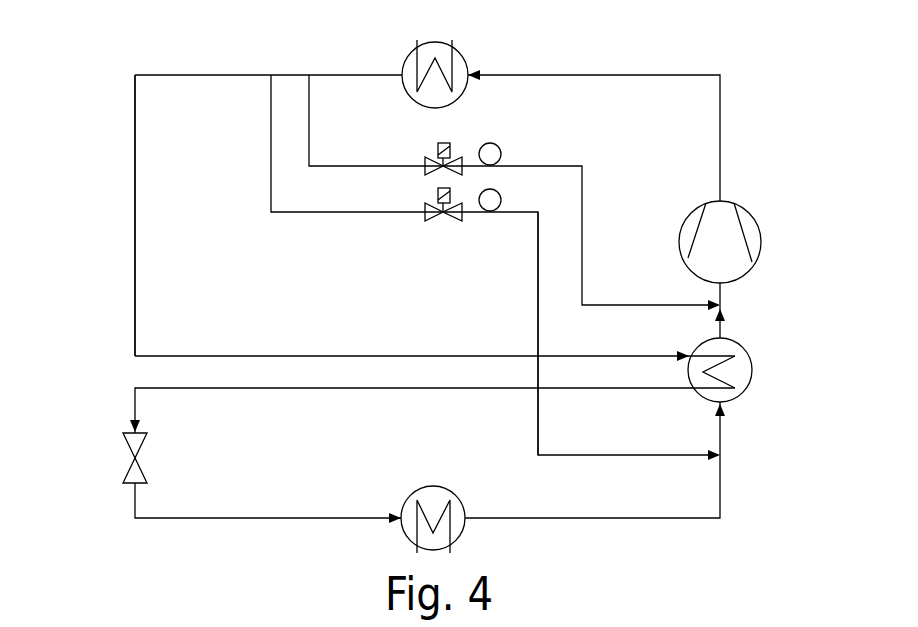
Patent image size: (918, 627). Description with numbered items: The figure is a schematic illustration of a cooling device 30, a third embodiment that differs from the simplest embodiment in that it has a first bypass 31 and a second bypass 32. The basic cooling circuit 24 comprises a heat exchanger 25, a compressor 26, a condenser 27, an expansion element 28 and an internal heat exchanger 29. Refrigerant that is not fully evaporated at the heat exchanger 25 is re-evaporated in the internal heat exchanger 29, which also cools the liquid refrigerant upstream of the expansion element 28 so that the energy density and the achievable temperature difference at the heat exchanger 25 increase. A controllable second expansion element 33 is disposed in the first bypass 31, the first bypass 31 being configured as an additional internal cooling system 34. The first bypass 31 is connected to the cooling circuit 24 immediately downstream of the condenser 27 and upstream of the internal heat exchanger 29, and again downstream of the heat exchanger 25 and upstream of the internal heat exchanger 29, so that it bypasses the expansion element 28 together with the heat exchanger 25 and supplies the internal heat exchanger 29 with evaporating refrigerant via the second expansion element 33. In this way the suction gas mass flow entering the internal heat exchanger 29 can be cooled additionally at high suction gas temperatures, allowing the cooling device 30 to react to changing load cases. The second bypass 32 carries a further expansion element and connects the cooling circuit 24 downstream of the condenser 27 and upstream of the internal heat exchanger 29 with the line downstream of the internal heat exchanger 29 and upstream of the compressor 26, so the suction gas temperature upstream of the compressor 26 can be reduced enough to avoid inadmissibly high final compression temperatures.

The cooling circuit 24 is at (120, 156).
The heat exchanger 25 is at (435, 498).
The compressor 26 is at (724, 222).
The condenser 27 is at (448, 66).
The expansion element 28 is at (120, 472).
The internal heat exchanger 29 is at (741, 380).
The cooling device 30 is at (104, 84).
The first bypass 31 is at (377, 216).
The second bypass 32 is at (347, 172).
The second expansion element 33 is at (431, 219).
The additional internal cooling system 34 is at (524, 278).